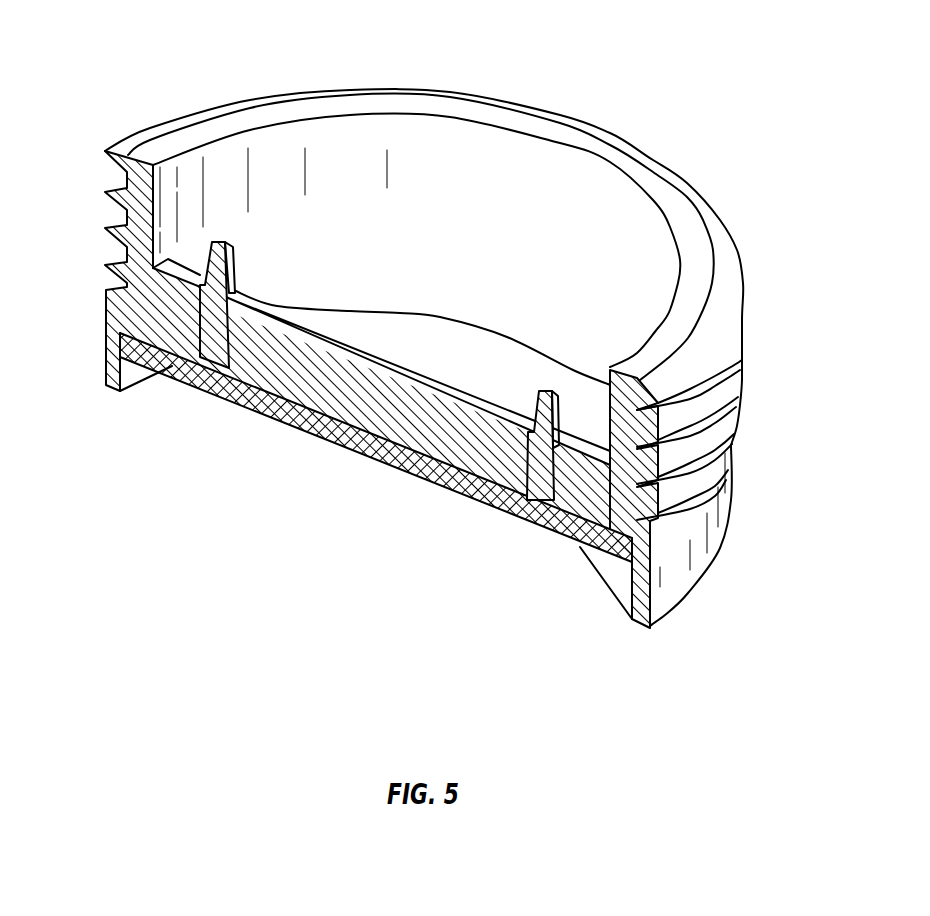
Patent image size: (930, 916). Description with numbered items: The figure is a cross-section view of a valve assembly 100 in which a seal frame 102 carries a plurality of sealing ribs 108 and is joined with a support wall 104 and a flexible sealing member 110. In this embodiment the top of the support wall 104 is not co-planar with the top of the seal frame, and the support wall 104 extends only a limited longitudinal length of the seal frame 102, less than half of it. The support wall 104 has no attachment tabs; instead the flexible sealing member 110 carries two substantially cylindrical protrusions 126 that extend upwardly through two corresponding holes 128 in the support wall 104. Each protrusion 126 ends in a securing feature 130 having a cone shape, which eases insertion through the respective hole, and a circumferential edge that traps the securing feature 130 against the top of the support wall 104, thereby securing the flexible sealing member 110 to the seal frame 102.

The valve assembly 100 is at (654, 95).
The seal frame 102 is at (680, 577).
The support wall 104 is at (343, 403).
The sealing ribs 108 is at (726, 346).
The flexible sealing member 110 is at (383, 450).
The protrusions 126 is at (210, 330).
The holes 128 is at (522, 480).
The securing feature 130 is at (213, 270).